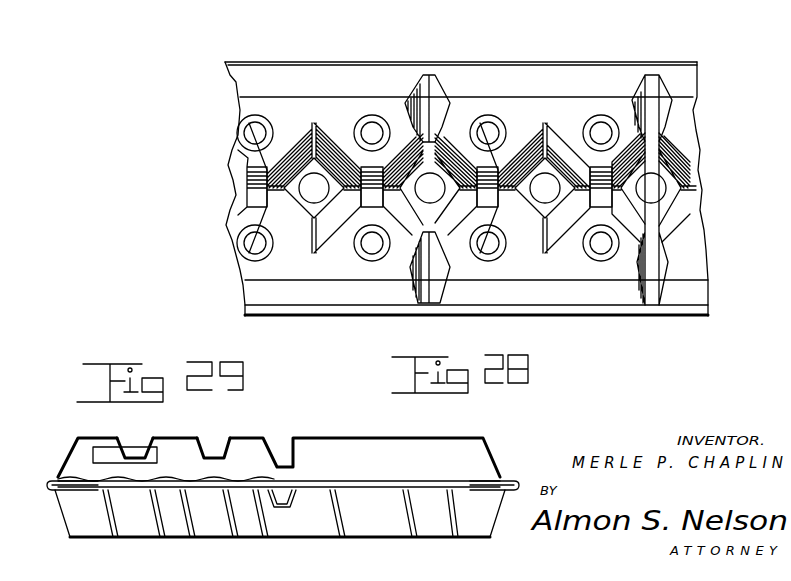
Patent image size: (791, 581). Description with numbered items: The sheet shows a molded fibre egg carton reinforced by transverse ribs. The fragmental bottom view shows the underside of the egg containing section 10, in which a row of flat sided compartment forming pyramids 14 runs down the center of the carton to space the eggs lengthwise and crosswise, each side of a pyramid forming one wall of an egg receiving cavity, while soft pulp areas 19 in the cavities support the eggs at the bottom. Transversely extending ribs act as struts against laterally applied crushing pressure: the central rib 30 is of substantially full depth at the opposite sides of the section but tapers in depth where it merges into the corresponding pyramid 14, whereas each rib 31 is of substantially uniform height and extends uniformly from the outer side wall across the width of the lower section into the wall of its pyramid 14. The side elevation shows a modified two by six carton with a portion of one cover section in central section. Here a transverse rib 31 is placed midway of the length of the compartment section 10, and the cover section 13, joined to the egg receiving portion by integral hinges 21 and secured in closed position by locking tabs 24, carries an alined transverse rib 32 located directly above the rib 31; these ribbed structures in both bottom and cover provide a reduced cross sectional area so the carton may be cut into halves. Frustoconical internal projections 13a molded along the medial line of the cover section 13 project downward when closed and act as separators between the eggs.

In FIG. 29, the egg containing section 10 is at (75, 517).
In FIG. 29, the cover section 13 is at (76, 437).
In FIG. 29, the internal projections 13a is at (214, 447).
In FIG. 28, the pyramids 14 is at (730, 157).
In FIG. 28, the soft pulp area 19 is at (361, 124).
In FIG. 29, the hinges 21 is at (356, 465).
In FIG. 29, the locking tabs 24 is at (92, 450).
In FIG. 28, the central rib 30 is at (440, 95).
In FIG. 28, the transverse rib 31 is at (662, 92).
In FIG. 29, the transverse rib 31 is at (285, 523).
In FIG. 29, the transverse ribs 32 is at (280, 450).